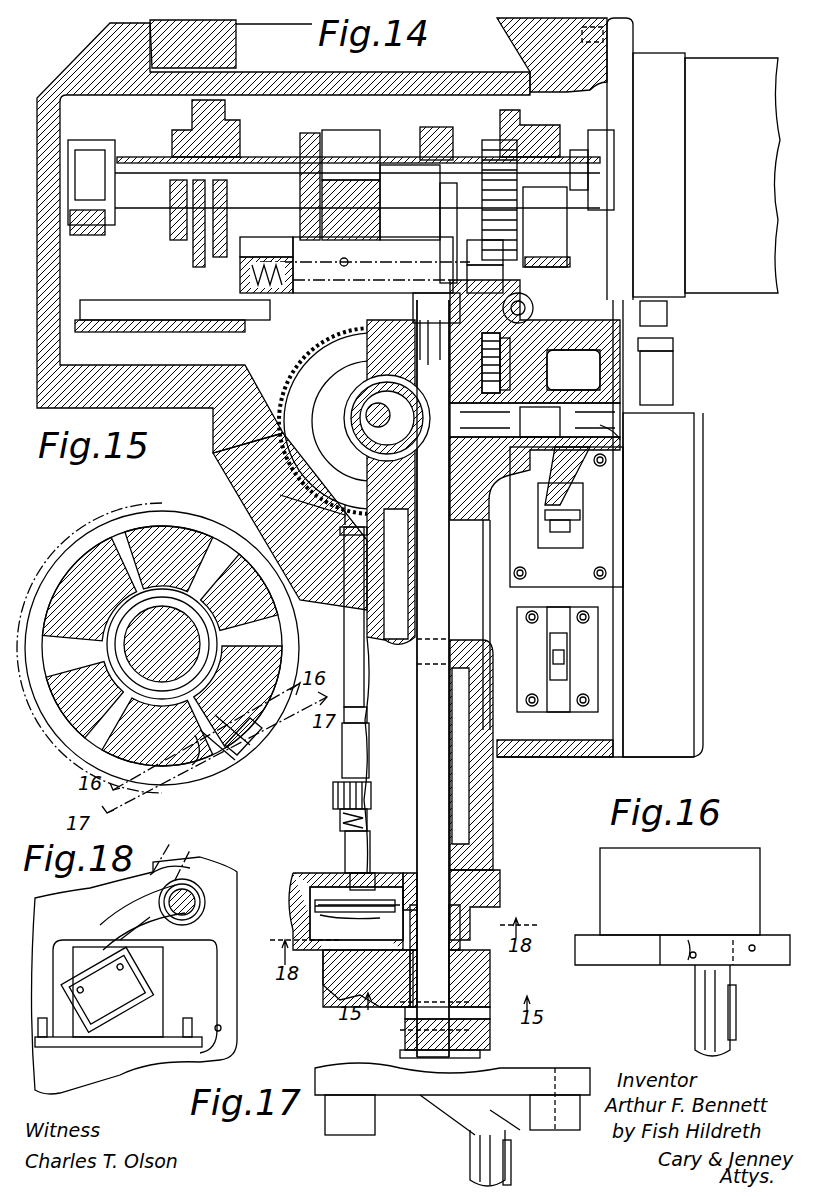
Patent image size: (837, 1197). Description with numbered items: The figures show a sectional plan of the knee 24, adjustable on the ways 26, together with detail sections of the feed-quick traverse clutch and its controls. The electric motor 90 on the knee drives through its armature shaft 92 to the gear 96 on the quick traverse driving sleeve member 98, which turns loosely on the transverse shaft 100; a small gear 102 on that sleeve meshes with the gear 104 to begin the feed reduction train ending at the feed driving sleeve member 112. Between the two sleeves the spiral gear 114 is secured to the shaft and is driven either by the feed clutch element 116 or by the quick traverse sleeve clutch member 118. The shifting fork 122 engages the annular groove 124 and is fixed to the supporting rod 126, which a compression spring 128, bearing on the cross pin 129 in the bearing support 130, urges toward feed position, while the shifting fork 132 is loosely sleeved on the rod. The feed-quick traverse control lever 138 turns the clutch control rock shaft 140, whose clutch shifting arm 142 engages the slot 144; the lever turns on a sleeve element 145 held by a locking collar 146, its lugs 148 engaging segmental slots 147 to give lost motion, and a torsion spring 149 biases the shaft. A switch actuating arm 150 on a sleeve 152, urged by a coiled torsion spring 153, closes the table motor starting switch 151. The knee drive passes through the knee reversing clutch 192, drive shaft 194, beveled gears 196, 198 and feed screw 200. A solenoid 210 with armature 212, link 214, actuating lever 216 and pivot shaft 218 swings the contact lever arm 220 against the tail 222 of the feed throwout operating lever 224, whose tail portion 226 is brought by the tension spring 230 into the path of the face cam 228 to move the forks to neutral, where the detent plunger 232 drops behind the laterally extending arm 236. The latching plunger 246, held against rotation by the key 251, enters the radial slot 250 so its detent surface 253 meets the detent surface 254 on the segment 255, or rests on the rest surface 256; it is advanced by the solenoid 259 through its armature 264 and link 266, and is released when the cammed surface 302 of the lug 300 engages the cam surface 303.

In FIG. 14, the knee 24 is at (100, 55).
In FIG. 18, the knee 24 is at (137, 1069).
In FIG. 14, the ways 26 is at (520, 52).
In FIG. 14, the electric motor 90 is at (732, 196).
In FIG. 14, the armature shaft 92 is at (570, 165).
In FIG. 14, the gear 96 is at (540, 110).
In FIG. 14, the quick traverse driving sleeve member 98 is at (410, 202).
In FIG. 14, the transverse shaft 100 is at (165, 185).
In FIG. 14, the small gear 102 is at (501, 200).
In FIG. 14, the gear 104 is at (514, 364).
In FIG. 14, the feed driving sleeve member 112 is at (150, 160).
In FIG. 14, the spiral gear 114 is at (358, 135).
In FIG. 14, the feed clutch element 116 is at (310, 133).
In FIG. 14, the quick traverse sleeve clutch member 118 is at (428, 135).
In FIG. 14, the shifting fork 122 is at (365, 265).
In FIG. 14, the annular groove 124 is at (280, 155).
In FIG. 14, the supporting rod 126 is at (570, 262).
In FIG. 14, the compression spring 128 is at (272, 293).
In FIG. 14, the cross pin 129 is at (258, 320).
In FIG. 14, the bearing support 130 is at (270, 275).
In FIG. 14, the shifting fork 132 is at (442, 248).
In FIG. 14, the feed-quick traverse control lever 138 is at (395, 1030).
In FIG. 15, the feed-quick traverse control lever 138 is at (88, 520).
In FIG. 17, the feed-quick traverse control lever 138 is at (325, 1095).
In FIG. 18, the feed-quick traverse control lever 138 is at (182, 856).
In FIG. 14, the clutch control rock shaft 140 is at (445, 770).
In FIG. 15, the clutch control rock shaft 140 is at (42, 580).
In FIG. 18, the clutch control rock shaft 140 is at (215, 988).
In FIG. 14, the clutch shifting arm 142 is at (436, 344).
In FIG. 14, the slot 144 is at (412, 308).
In FIG. 14, the sleeve element 145 is at (495, 1012).
In FIG. 15, the sleeve element 145 is at (182, 545).
In FIG. 16, the sleeve element 145 is at (715, 860).
In FIG. 14, the locking collar 146 is at (482, 1055).
In FIG. 15, the segmental slots 147 is at (225, 620).
In FIG. 14, the lugs 148 is at (370, 992).
In FIG. 15, the lugs 148 is at (250, 565).
In FIG. 17, the lugs 148 is at (555, 1115).
In FIG. 14, the torsion spring 149 is at (400, 960).
In FIG. 15, the torsion spring 149 is at (112, 590).
In FIG. 14, the switch actuating arm 150 is at (350, 860).
In FIG. 18, the switch actuating arm 150 is at (110, 930).
In FIG. 14, the table motor starting switch 151 is at (335, 910).
In FIG. 18, the table motor starting switch 151 is at (110, 1008).
In FIG. 14, the sleeve 152 is at (478, 912).
In FIG. 18, the sleeve 152 is at (170, 930).
In FIG. 14, the coiled torsion spring 153 is at (375, 900).
In FIG. 18, the coiled torsion spring 153 is at (160, 898).
In FIG. 14, the knee reversing clutch 192 is at (366, 812).
In FIG. 14, the drive shaft 194 is at (368, 690).
In FIG. 14, the beveled gear 196 is at (358, 515).
In FIG. 14, the beveled gear 198 is at (312, 495).
In FIG. 14, the feed screw 200 is at (360, 430).
In FIG. 14, the solenoid 210 is at (595, 545).
In FIG. 14, the armature 212 is at (562, 535).
In FIG. 14, the link 214 is at (578, 515).
In FIG. 14, the actuating lever 216 is at (585, 480).
In FIG. 14, the pivot shaft 218 is at (612, 430).
In FIG. 14, the contact lever arm 220 is at (535, 420).
In FIG. 14, the tail 222 is at (455, 380).
In FIG. 14, the feed throwout operating lever 224 is at (485, 279).
In FIG. 14, the tail portion 226 is at (485, 252).
In FIG. 14, the face cam 228 is at (505, 118).
In FIG. 14, the tension spring 230 is at (503, 310).
In FIG. 14, the detent plunger 232 is at (610, 353).
In FIG. 14, the laterally extending arm 236 is at (507, 363).
In FIG. 14, the plunger 246 is at (495, 932).
In FIG. 15, the plunger 246 is at (255, 735).
In FIG. 16, the plunger 246 is at (705, 1032).
In FIG. 17, the plunger 246 is at (470, 1160).
In FIG. 15, the radial slot 250 is at (195, 770).
In FIG. 16, the key 251 is at (738, 1015).
In FIG. 16, the detent surface 253 is at (690, 940).
In FIG. 16, the detent surface 254 is at (690, 965).
In FIG. 14, the segment 255 is at (485, 985).
In FIG. 15, the segment 255 is at (270, 650).
In FIG. 16, the segment 255 is at (765, 935).
In FIG. 16, the rest surface 256 is at (752, 960).
In FIG. 14, the solenoid 259 is at (590, 632).
In FIG. 14, the armature 264 is at (560, 640).
In FIG. 14, the link 266 is at (560, 668).
In FIG. 15, the lug 300 is at (222, 760).
In FIG. 17, the lug 300 is at (500, 1130).
In FIG. 17, the cammed surface 302 is at (445, 1112).
In FIG. 17, the cam surface 303 is at (510, 1160).